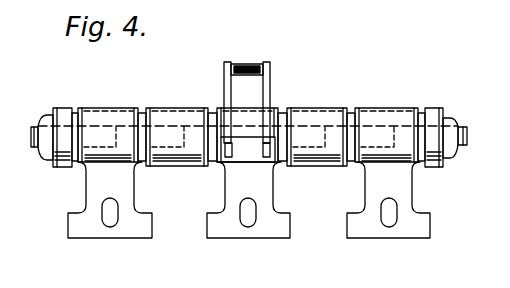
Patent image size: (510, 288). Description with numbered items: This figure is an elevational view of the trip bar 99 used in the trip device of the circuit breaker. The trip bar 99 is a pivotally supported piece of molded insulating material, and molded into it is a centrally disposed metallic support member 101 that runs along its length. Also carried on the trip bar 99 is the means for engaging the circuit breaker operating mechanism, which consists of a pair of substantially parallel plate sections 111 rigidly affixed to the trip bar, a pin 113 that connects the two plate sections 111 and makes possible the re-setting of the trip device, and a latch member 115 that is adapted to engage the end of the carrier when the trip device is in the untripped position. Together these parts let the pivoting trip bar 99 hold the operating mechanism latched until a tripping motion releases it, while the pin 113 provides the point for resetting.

The trip bar 99 is at (160, 87).
The support member 101 is at (467, 137).
The plate sections 111 is at (224, 83).
The pin 113 is at (254, 63).
The latch member 115 is at (237, 159).